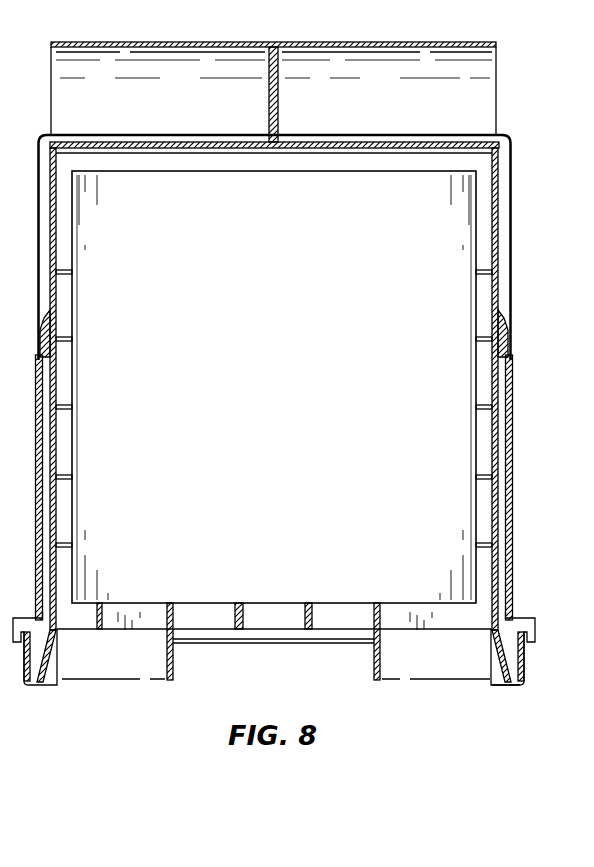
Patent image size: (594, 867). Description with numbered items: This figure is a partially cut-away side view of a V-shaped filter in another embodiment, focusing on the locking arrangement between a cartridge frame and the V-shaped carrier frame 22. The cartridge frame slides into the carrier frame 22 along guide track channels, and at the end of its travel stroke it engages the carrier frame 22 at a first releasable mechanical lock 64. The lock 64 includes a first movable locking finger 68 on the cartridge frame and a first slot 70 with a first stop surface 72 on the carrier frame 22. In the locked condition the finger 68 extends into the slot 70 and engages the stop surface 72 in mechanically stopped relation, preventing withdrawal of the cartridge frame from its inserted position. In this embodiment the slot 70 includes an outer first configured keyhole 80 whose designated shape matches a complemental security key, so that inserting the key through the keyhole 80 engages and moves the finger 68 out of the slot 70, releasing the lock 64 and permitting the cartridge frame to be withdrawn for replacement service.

The V-shaped carrier frame 22 is at (37, 182).
The first releasable mechanical lock 64 is at (478, 684).
The first movable locking finger 68 is at (496, 660).
The first slot 70 is at (513, 648).
The first stop surface 72 is at (489, 680).
The first configured keyhole 80 is at (524, 660).